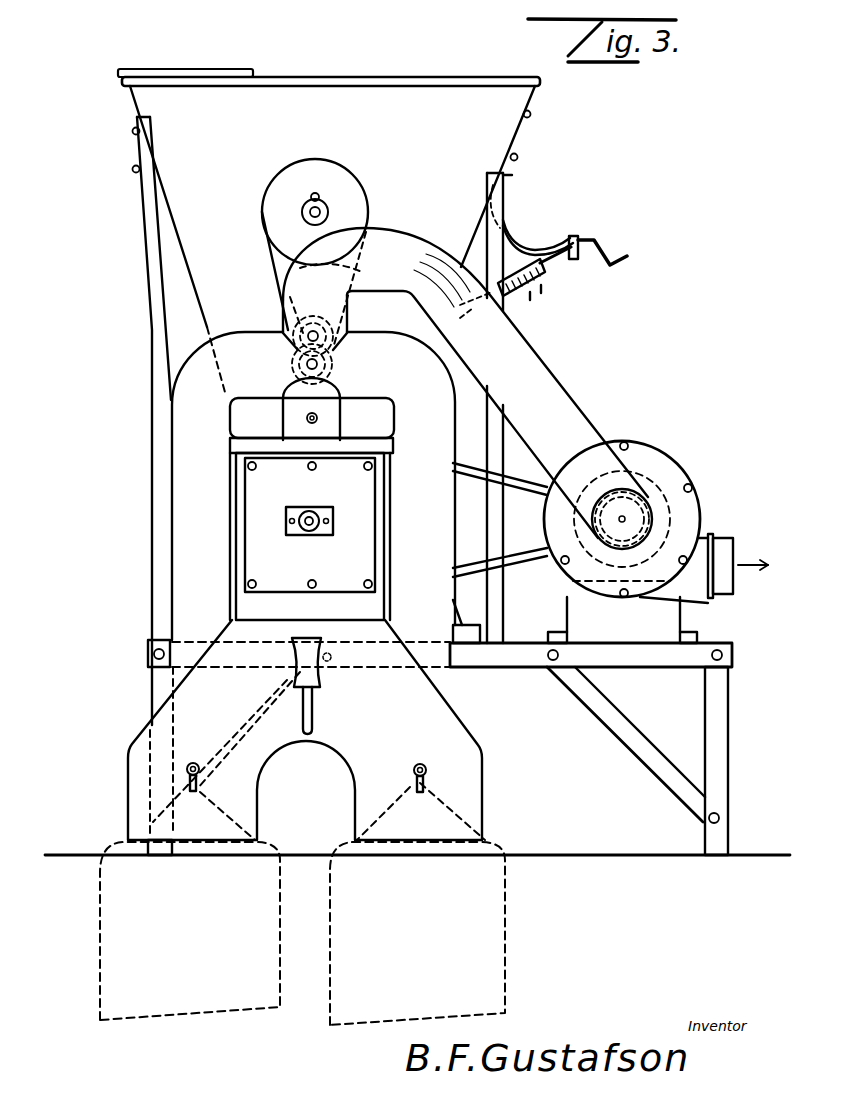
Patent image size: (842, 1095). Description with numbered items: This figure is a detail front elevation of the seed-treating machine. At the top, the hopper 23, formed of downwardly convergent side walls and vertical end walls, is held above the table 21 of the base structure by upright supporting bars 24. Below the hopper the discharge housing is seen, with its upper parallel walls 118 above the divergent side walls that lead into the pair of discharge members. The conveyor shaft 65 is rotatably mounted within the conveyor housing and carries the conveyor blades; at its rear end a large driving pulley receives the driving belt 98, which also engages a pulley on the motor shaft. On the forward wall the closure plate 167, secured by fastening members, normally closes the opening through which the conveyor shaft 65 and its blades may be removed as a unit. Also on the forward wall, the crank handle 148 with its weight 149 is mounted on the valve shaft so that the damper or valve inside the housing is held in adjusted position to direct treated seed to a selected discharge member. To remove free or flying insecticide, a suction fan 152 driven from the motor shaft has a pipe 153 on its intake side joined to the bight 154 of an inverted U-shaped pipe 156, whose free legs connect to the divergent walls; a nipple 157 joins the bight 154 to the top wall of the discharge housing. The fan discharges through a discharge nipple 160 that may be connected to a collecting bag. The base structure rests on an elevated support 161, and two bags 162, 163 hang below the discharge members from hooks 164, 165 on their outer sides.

The table 21 is at (521, 643).
The hopper 23 is at (497, 146).
The upright supporting bars 24 is at (157, 398).
The conveyor shaft 65 is at (310, 518).
The driving belt 98 is at (537, 553).
The upper parallel walls 118 is at (228, 539).
The crank handle 148 is at (314, 708).
The weight 149 is at (313, 637).
The suction fan 152 is at (648, 453).
The pipe 153 is at (545, 387).
The bight 154 is at (287, 271).
The inverted U-shaped pipe 156 is at (196, 366).
The nipple 157 is at (336, 407).
The discharge nipple 160 is at (722, 537).
The elevated support 161 is at (612, 860).
The bag 162 is at (218, 1013).
The bag 163 is at (505, 957).
The hook 164 is at (200, 778).
The hook 165 is at (412, 783).
The closure plate 167 is at (310, 525).